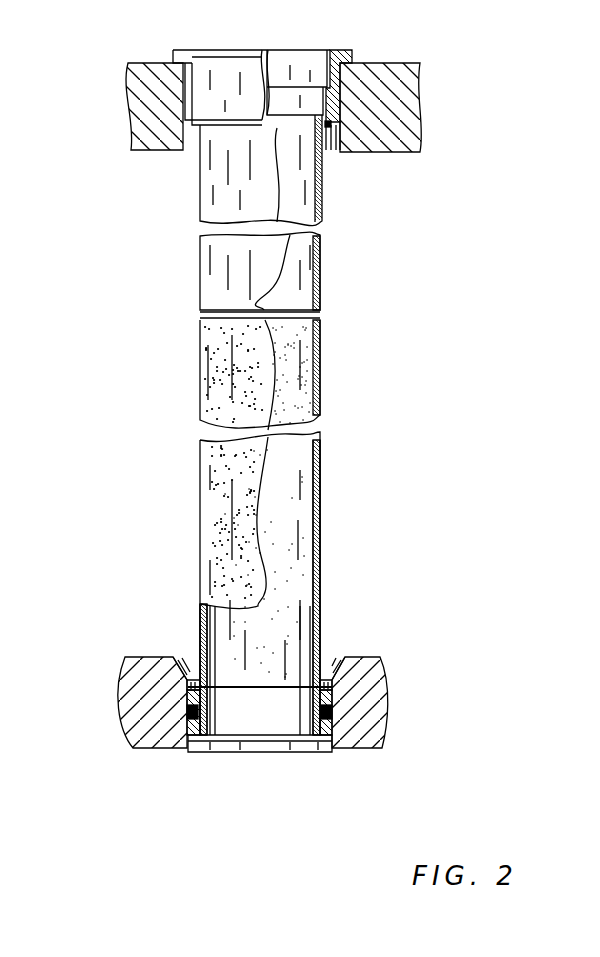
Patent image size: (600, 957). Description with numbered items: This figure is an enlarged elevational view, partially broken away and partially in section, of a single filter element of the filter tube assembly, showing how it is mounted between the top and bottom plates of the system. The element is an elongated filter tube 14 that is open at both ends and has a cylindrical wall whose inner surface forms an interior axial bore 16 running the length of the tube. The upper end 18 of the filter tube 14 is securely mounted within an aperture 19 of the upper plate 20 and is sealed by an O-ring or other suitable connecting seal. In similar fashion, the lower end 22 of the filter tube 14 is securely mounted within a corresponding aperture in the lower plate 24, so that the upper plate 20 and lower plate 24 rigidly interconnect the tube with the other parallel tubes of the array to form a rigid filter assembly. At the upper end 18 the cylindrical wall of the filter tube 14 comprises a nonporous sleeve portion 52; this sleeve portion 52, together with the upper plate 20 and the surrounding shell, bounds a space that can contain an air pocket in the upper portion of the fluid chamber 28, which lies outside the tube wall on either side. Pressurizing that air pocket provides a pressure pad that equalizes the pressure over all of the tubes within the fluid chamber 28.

The filter tube element 14 is at (213, 368).
The interior axial bore 16 is at (303, 492).
The upper end 18 is at (331, 128).
The aperture 19 is at (188, 82).
The upper plate 20 is at (380, 70).
The lower end 22 is at (226, 718).
The lower plate 24 is at (382, 685).
The fluid chamber 28 is at (187, 492).
The nonporous sleeve portion 52 is at (213, 268).